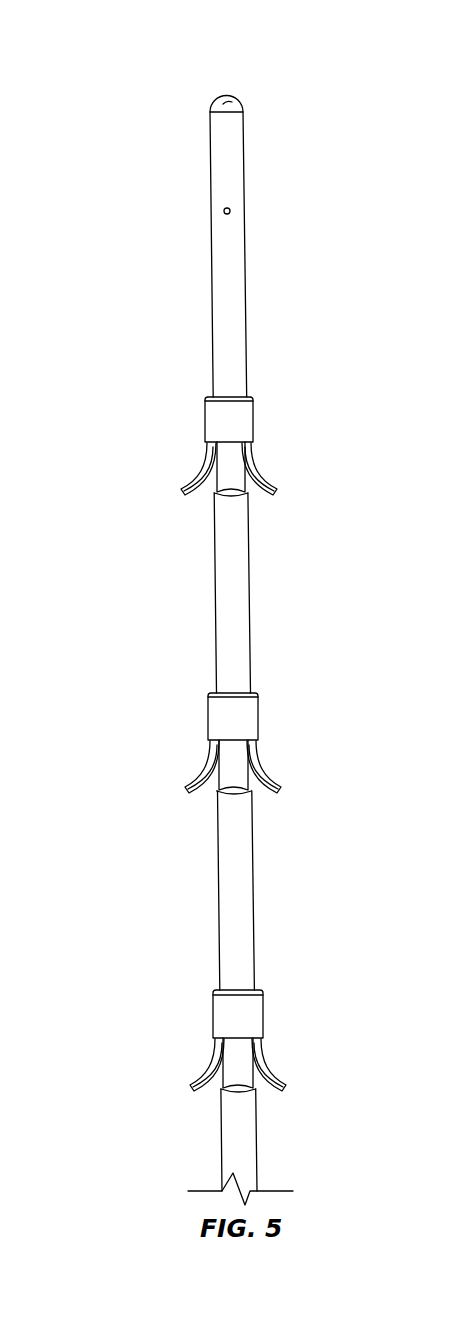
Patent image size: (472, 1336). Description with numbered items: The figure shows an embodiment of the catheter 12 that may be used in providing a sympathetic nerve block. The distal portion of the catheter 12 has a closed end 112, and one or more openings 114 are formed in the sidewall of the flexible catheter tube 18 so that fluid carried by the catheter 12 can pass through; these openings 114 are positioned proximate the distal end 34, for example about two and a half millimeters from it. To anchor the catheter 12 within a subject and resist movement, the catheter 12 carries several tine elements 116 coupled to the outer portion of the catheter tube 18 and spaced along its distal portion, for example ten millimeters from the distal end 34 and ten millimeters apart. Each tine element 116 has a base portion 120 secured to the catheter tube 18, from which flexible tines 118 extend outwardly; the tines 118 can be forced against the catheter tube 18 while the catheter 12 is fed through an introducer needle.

The catheter 12 is at (170, 113).
The catheter tube 18 is at (226, 372).
The distal end 34 is at (247, 98).
The closed end 112 is at (240, 113).
The openings 114 is at (231, 212).
The tine element 116 is at (243, 427).
The tines 118 is at (189, 475).
The base portion 120 is at (222, 425).